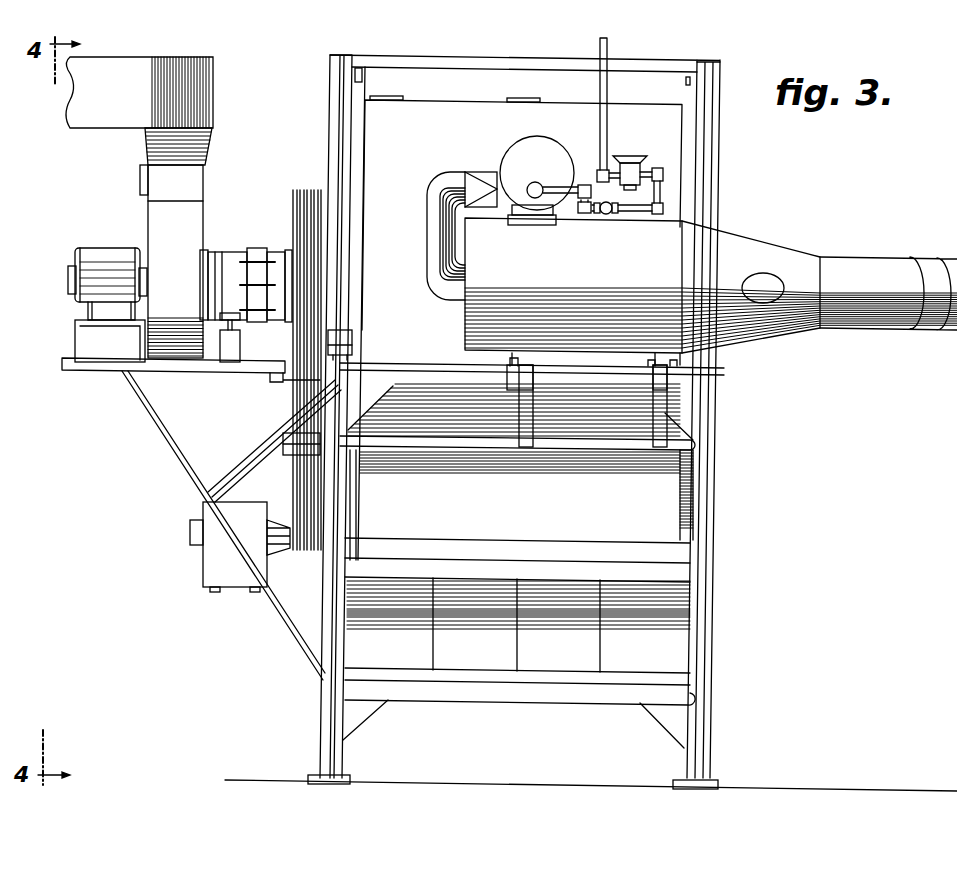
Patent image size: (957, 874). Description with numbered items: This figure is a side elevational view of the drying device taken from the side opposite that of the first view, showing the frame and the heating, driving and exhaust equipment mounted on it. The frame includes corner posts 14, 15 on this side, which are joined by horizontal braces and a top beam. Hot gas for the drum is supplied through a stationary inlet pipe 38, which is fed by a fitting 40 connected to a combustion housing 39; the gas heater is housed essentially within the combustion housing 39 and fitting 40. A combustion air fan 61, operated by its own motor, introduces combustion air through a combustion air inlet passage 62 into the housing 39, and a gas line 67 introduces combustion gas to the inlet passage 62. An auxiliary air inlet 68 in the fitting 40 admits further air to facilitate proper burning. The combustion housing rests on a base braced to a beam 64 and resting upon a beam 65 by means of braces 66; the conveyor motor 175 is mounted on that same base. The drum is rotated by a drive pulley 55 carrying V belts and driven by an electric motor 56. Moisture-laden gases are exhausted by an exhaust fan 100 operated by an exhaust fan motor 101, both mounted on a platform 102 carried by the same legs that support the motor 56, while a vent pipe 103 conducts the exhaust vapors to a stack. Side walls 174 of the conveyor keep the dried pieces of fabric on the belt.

The corner post 14 is at (320, 707).
The corner post 15 is at (710, 723).
The inlet pipe 38 is at (850, 267).
The combustion housing 39 is at (668, 230).
The fitting 40 is at (757, 250).
The drive pulley 55 is at (283, 547).
The electric motor 56 is at (217, 550).
The combustion air fan 61 is at (508, 148).
The combustion air inlet passage 62 is at (425, 247).
The beam 64 is at (588, 440).
The beam 65 is at (456, 380).
The braces 66 is at (533, 420).
The gas line 67 is at (608, 50).
The auxiliary air inlet 68 is at (767, 273).
The exhaust fan 100 is at (188, 218).
The exhaust fan motor 101 is at (85, 250).
The platform 102 is at (97, 366).
The vent pipe 103 is at (84, 118).
The side walls 174 is at (353, 503).
The conveyor motor 175 is at (345, 340).